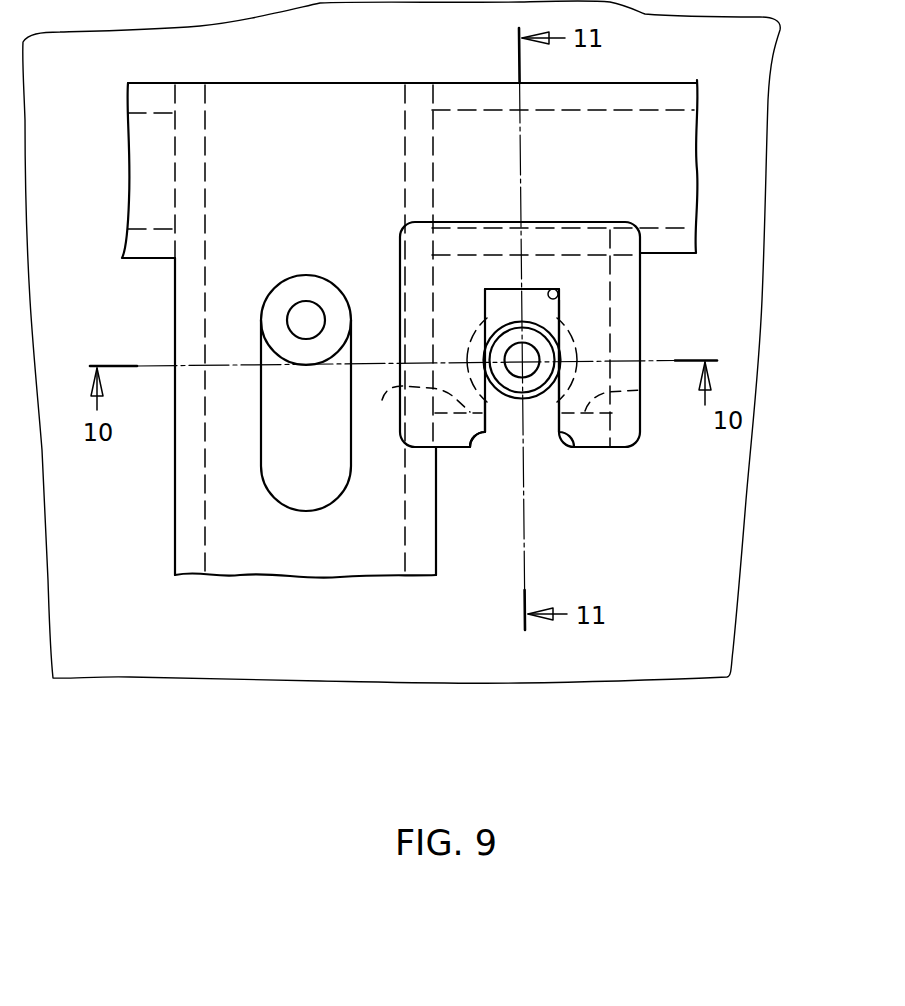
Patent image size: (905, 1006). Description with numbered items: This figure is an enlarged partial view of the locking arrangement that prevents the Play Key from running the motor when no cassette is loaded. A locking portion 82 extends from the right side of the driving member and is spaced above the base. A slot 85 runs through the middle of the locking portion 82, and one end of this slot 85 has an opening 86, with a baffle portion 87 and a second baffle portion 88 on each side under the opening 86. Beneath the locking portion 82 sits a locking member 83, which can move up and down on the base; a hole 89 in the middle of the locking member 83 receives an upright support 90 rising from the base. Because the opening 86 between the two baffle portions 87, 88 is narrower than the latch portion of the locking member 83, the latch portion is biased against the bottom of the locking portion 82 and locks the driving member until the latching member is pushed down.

The locking portion 82 is at (641, 431).
The locking member 83 is at (541, 418).
The slot 85 is at (557, 290).
The opening 86 is at (512, 435).
The baffle portion 87 is at (423, 407).
The baffle portion 88 is at (645, 389).
The hole 89 is at (540, 357).
The upright support 90 is at (506, 349).